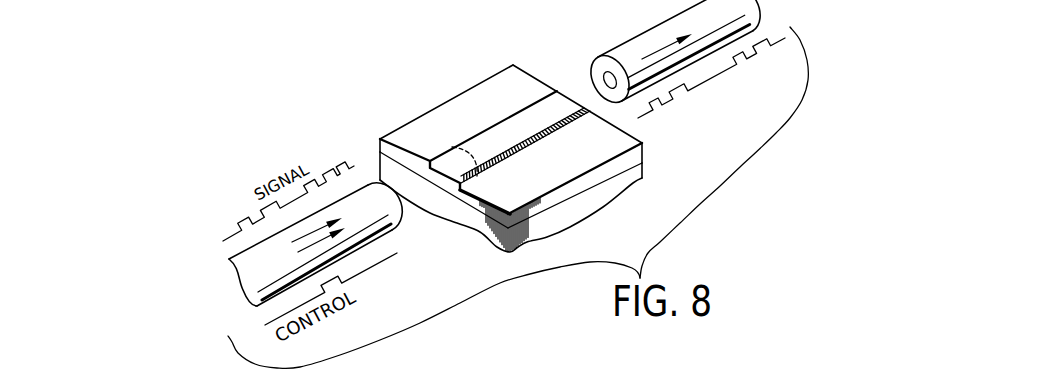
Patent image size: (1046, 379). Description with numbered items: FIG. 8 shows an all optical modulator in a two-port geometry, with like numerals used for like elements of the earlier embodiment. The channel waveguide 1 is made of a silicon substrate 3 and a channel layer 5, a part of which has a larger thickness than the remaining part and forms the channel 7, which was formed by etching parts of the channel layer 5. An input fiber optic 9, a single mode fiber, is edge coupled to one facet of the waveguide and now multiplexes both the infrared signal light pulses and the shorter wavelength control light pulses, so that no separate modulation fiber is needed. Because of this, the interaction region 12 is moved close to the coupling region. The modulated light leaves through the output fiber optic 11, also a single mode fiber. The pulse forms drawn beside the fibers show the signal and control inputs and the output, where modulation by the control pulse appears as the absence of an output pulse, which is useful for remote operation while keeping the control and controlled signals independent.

The channel waveguide 1 is at (398, 122).
The silicon substrate 3 is at (582, 203).
The channel layer 5 is at (612, 165).
The channel 7 is at (445, 178).
The input fiber optic 9 is at (363, 229).
The output fiber optic 11 is at (634, 48).
The interaction region 12 is at (455, 167).